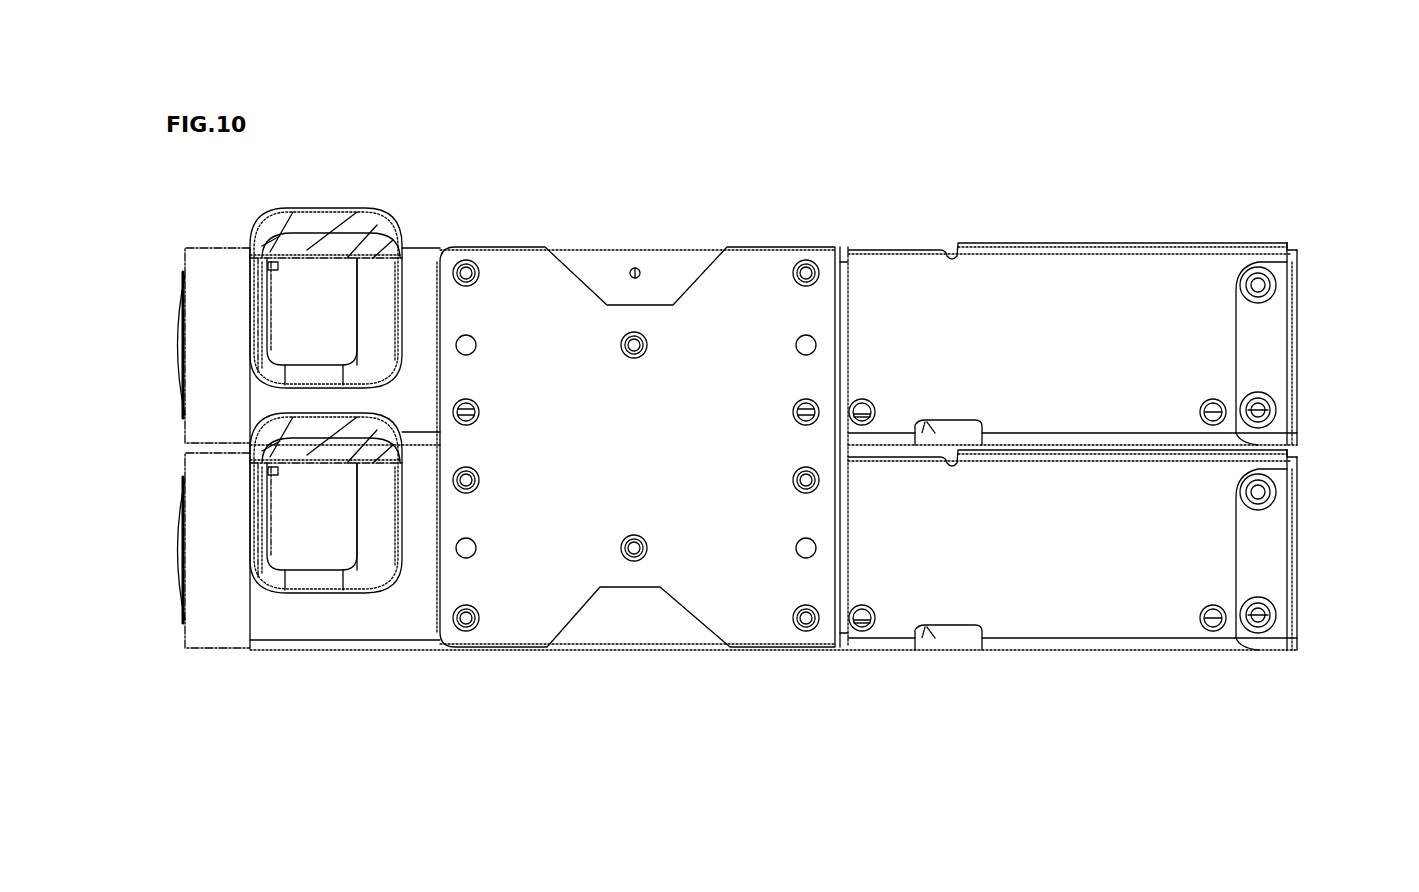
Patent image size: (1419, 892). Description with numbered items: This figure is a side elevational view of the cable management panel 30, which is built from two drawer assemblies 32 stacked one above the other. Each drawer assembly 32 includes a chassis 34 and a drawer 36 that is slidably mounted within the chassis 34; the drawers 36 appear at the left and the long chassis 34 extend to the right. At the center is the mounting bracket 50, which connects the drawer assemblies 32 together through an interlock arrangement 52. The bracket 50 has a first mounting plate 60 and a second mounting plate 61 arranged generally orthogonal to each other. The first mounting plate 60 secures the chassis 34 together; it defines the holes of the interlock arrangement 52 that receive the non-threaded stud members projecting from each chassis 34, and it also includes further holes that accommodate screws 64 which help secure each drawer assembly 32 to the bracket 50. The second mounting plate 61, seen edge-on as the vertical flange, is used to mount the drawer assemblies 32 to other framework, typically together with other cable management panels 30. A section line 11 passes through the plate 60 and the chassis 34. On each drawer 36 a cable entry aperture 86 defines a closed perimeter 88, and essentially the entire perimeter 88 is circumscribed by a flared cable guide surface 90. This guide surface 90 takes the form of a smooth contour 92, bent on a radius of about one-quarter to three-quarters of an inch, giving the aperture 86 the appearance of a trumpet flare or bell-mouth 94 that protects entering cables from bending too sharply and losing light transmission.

The section line 11- 11 is at (892, 692).
The cable management panel 30 is at (828, 150).
The drawer assembly 32 is at (1319, 374).
The chassis 34 is at (1122, 275).
The drawer 36 is at (218, 247).
The mounting bracket 50 is at (757, 216).
The interlock arrangement 52 is at (484, 526).
The first mounting plate 60 is at (742, 357).
The second mounting plate 61 is at (849, 290).
The screw 64 is at (467, 272).
The cable entry aperture 86 is at (270, 305).
The closed perimeter 88 is at (400, 302).
The flared cable guide surface 90 is at (318, 222).
The smooth contour 92 is at (258, 331).
The bell-mouth 94 is at (402, 210).